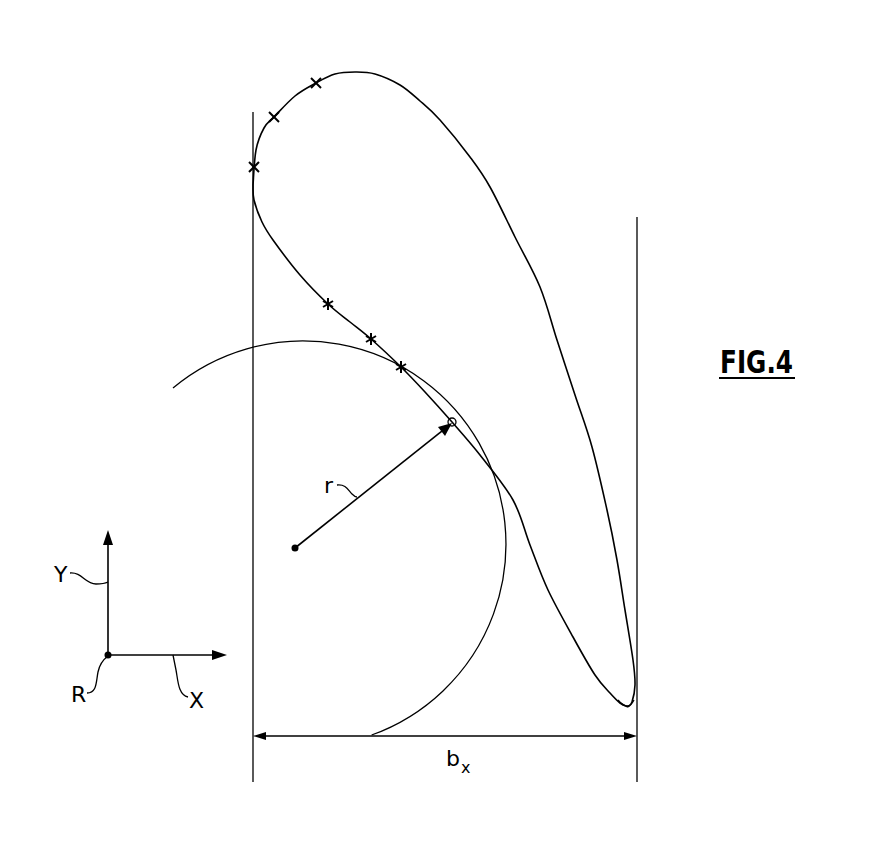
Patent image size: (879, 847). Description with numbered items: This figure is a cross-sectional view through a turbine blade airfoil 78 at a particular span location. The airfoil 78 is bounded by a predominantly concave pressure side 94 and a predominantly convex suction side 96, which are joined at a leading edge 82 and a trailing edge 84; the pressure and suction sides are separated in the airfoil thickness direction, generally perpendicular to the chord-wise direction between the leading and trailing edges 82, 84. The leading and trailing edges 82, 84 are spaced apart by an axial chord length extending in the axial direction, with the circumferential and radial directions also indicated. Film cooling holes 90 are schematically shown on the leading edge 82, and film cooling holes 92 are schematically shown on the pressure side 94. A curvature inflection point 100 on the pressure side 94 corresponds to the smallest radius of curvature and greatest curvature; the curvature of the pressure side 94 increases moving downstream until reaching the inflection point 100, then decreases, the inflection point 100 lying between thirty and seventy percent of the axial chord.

The airfoil 78 is at (570, 122).
The leading edge 82 is at (274, 117).
The trailing edge 84 is at (628, 707).
The film cooling holes 90 is at (316, 83).
The film cooling holes 92 is at (328, 304).
The pressure side 94 is at (548, 585).
The suction side 96 is at (540, 287).
The curvature inflection point 100 is at (452, 422).